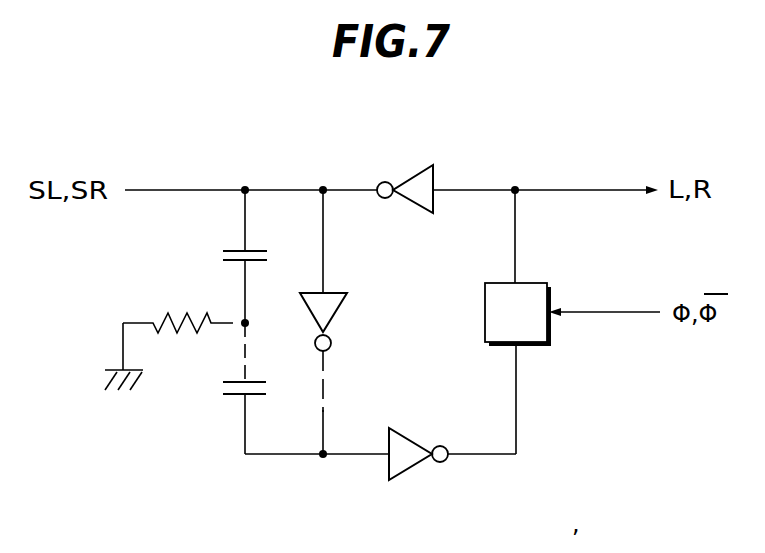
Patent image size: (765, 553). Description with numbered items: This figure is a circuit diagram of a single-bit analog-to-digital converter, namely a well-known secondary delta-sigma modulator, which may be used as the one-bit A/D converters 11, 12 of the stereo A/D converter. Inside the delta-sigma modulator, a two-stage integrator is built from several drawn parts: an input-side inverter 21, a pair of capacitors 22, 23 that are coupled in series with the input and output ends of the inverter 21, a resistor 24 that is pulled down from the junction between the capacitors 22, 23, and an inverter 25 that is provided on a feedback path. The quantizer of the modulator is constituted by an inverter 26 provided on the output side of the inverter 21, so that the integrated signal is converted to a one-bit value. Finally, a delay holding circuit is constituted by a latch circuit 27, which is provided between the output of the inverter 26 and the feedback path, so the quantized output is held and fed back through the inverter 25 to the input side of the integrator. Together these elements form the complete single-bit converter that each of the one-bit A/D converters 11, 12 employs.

The one-bit A/D converter 11 is at (566, 537).
The one-bit A/D converter 12 is at (618, 537).
The input-side inverter 21 is at (328, 293).
The capacitor 22 is at (221, 257).
The capacitor 23 is at (237, 402).
The resistor 24 is at (177, 313).
The inverter 25 is at (417, 172).
The inverter 26 is at (403, 435).
The latch circuit 27 is at (537, 343).